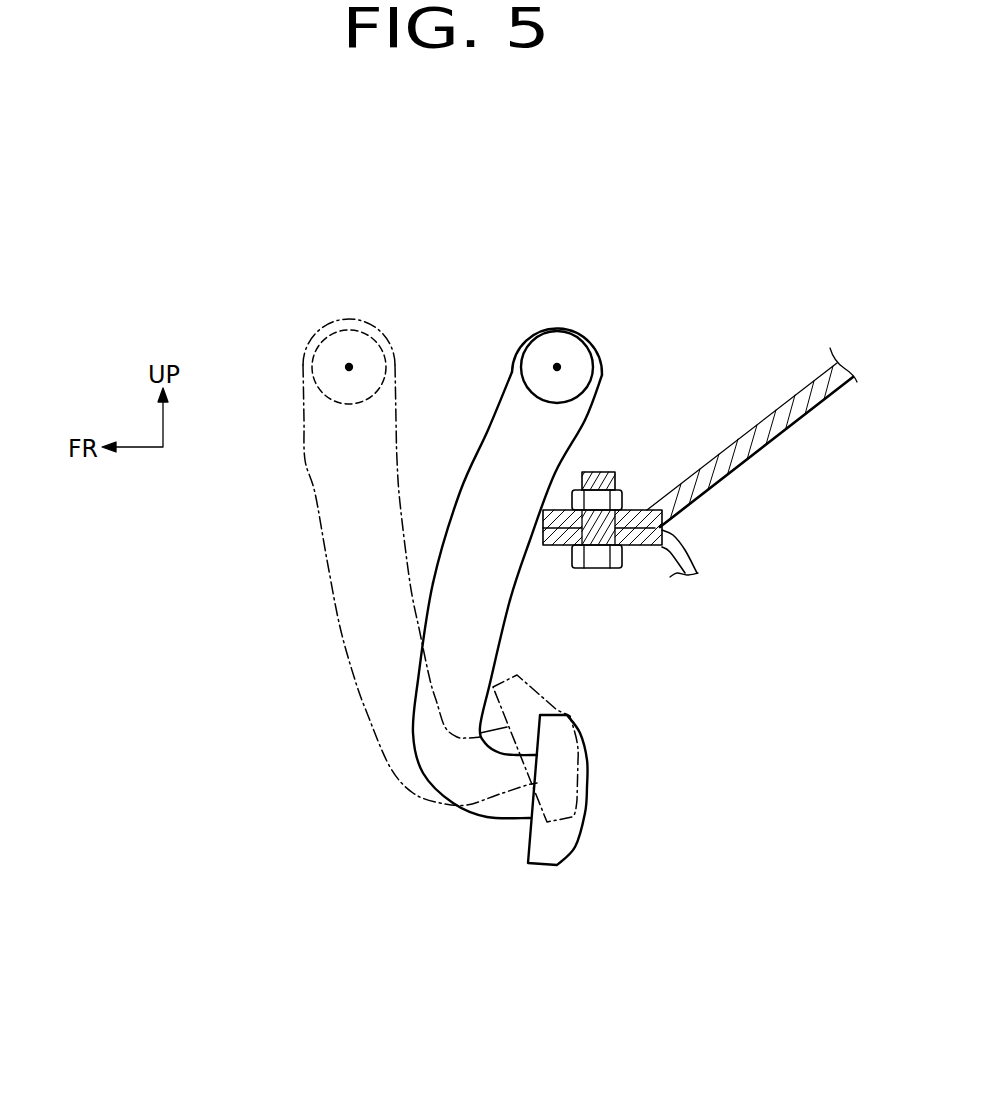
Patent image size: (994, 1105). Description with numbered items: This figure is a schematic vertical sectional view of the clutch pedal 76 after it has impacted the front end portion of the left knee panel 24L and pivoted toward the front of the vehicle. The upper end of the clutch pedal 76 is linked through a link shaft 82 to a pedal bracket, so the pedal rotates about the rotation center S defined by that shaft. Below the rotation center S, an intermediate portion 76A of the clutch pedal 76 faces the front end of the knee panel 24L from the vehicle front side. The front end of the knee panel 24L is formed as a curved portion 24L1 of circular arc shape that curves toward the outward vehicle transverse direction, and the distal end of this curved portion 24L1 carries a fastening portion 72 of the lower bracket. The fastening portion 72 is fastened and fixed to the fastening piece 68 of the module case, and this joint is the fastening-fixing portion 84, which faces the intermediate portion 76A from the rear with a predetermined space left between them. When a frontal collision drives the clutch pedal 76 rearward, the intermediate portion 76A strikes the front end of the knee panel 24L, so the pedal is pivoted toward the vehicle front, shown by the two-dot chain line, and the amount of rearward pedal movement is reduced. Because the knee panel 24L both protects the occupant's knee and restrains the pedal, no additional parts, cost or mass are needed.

The clutch pedal 76 is at (407, 568).
The intermediate portion 76A is at (460, 492).
The link shaft 82 is at (323, 332).
The rotation center S is at (349, 367).
The fastening portion 72 is at (627, 484).
The curved portion 24L1 is at (643, 510).
The left knee panel 24L is at (757, 450).
The fastening piece 68 is at (645, 548).
The fastening-fixing portion 84 is at (600, 580).